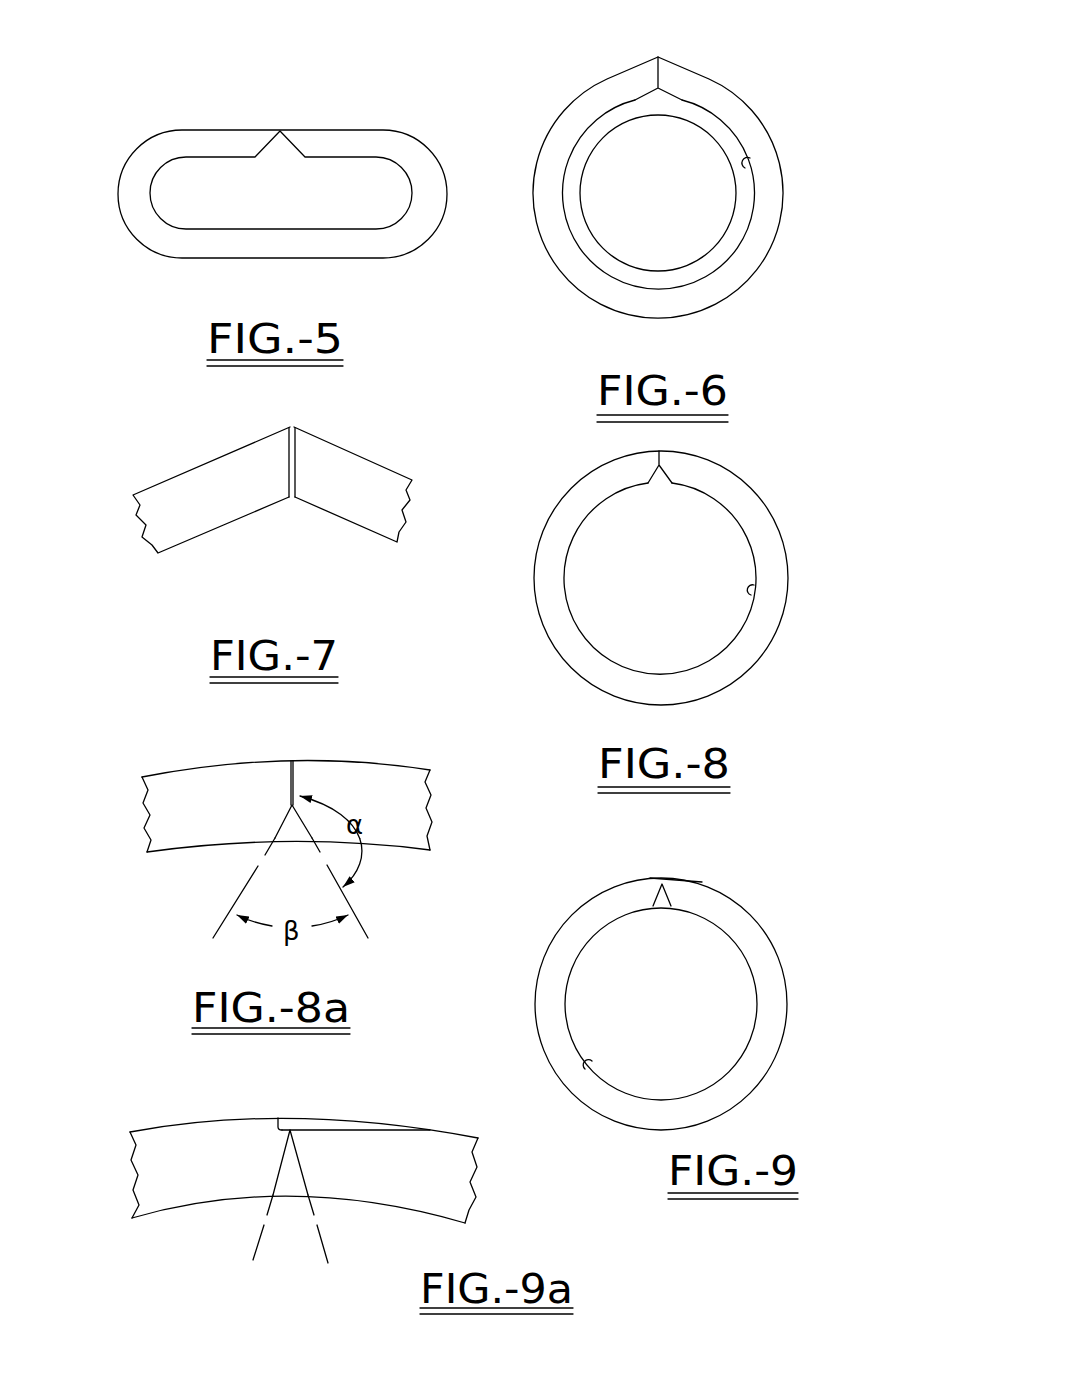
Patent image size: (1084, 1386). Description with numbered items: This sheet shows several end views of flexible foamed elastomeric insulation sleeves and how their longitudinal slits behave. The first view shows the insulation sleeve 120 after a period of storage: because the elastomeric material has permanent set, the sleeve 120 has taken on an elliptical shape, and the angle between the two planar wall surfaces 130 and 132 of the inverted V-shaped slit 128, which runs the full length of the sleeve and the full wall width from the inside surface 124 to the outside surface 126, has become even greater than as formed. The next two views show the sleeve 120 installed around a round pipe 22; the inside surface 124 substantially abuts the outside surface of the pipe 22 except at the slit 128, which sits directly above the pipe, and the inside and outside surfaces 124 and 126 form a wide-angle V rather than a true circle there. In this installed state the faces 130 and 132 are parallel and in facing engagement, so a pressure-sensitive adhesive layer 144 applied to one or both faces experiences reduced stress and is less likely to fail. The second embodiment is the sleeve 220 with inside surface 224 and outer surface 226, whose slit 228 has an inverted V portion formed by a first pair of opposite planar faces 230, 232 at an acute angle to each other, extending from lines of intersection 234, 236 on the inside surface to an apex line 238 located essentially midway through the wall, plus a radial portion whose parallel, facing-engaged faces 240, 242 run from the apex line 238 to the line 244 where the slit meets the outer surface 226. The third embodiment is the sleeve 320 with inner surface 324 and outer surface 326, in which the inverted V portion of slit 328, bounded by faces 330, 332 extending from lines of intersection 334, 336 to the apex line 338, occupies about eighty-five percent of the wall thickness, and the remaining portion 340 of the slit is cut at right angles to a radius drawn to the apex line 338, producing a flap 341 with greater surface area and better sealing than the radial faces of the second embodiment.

In FIG. 6, the pipe 22 is at (735, 233).
In FIG. 5, the insulation sleeve 120 is at (361, 126).
In FIG. 6, the insulation sleeve 120 is at (582, 295).
In FIG. 7, the insulation sleeve 120 is at (226, 450).
In FIG. 5, the inside surface 124 is at (183, 159).
In FIG. 6, the inside surface 124 is at (750, 165).
In FIG. 7, the inside surface 124 is at (178, 543).
In FIG. 5, the outside surface 126 is at (150, 136).
In FIG. 6, the outside surface 126 is at (762, 121).
In FIG. 7, the outside surface 126 is at (178, 472).
In FIG. 5, the slit 128 is at (280, 130).
In FIG. 6, the slit 128 is at (662, 80).
In FIG. 5, the wall surface 130 is at (263, 160).
In FIG. 5, the wall surface 132 is at (296, 160).
In FIG. 7, the pressure-sensitive adhesive layer 144 is at (294, 426).
In FIG. 8, the insulation sleeve 220 is at (772, 509).
In FIG. 8A, the insulation sleeve 220 is at (416, 764).
In FIG. 8, the inside surface 224 is at (756, 590).
In FIG. 8A, the inside surface 224 is at (170, 852).
In FIG. 8, the outer surface 226 is at (788, 558).
In FIG. 8A, the outer surface 226 is at (170, 772).
In FIG. 8, the slit 228 is at (661, 462).
In FIG. 8A, the slit 228 is at (282, 820).
In FIG. 8A, the planar face 230 is at (273, 841).
In FIG. 8A, the planar face 232 is at (313, 841).
In FIG. 8A, the line of intersection 234 is at (233, 903).
In FIG. 8A, the line of intersection 236 is at (350, 901).
In FIG. 8A, the apex line 238 is at (289, 802).
In FIG. 8A, the radial face 240 is at (290, 783).
In FIG. 8A, the radial face 242 is at (295, 768).
In FIG. 8A, the line of intersection 244 is at (291, 772).
In FIG. 9, the insulation sleeve 320 is at (537, 1033).
In FIG. 9A, the insulation sleeve 320 is at (166, 1125).
In FIG. 9, the inner surface 324 is at (588, 1066).
In FIG. 9, the outer surface 326 is at (627, 1126).
In FIG. 9, the slit 328 is at (665, 912).
In FIG. 9A, the slit 328 is at (291, 1201).
In FIG. 9A, the planar face 330 is at (278, 1170).
In FIG. 9A, the planar face 332 is at (302, 1170).
In FIG. 9A, the line of intersection 334 is at (260, 1237).
In FIG. 9A, the line of intersection 336 is at (322, 1238).
In FIG. 9, the apex line 338 is at (654, 878).
In FIG. 9A, the apex line 338 is at (279, 1117).
In FIG. 9, the remaining portion of slit 340 is at (688, 882).
In FIG. 9A, the remaining portion of slit 340 is at (388, 1130).
In FIG. 9A, the flap 341 is at (347, 1118).